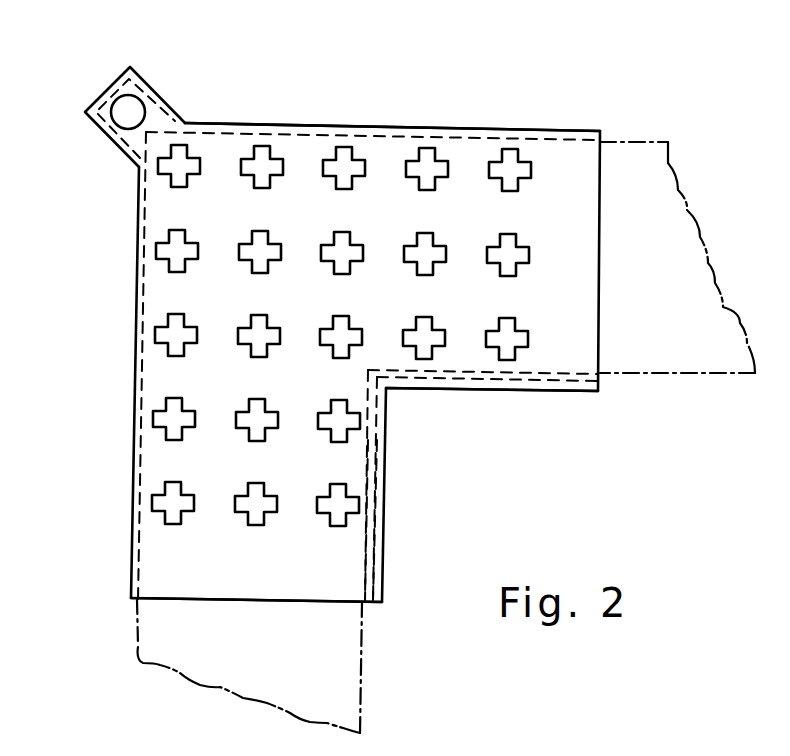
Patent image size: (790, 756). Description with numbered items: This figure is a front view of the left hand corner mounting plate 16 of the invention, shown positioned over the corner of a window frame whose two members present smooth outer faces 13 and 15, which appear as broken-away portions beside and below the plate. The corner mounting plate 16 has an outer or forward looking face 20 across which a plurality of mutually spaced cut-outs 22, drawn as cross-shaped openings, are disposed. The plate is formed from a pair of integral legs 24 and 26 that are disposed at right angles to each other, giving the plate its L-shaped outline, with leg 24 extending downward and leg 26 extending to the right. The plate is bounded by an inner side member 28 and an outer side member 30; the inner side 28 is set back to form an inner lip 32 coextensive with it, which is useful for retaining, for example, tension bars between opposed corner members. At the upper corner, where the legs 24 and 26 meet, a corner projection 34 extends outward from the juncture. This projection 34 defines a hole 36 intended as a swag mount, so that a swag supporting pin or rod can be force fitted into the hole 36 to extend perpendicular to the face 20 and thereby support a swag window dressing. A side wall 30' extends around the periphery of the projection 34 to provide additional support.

The smooth outer face 13 is at (157, 635).
The smooth outer face 15 is at (660, 178).
The corner mounting plate 16 is at (390, 84).
The outer face 20 is at (590, 135).
The cut-outs 22 is at (435, 158).
The leg 24 is at (342, 583).
The leg 26 is at (565, 343).
The inner side member 28 is at (367, 500).
The outer side member 30 is at (392, 99).
The side wall 30' is at (100, 117).
The inner lip 32 is at (412, 382).
The corner projection 34 is at (102, 84).
The hole 36 is at (140, 97).